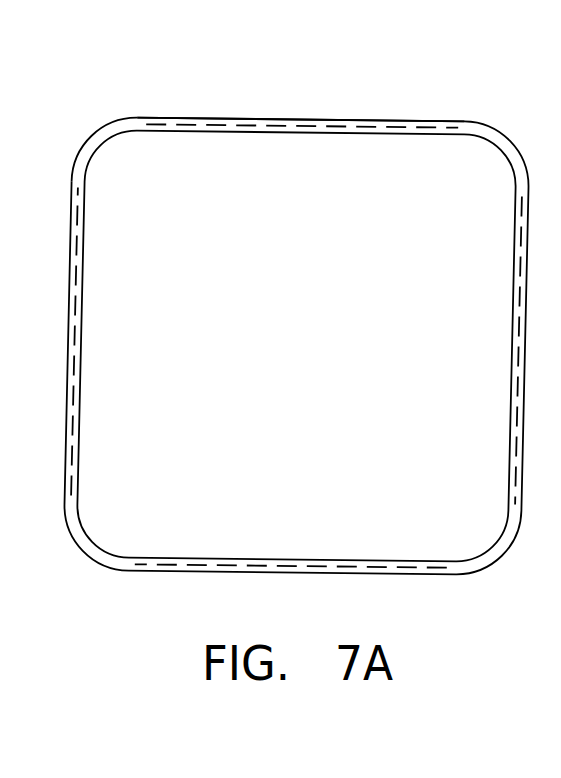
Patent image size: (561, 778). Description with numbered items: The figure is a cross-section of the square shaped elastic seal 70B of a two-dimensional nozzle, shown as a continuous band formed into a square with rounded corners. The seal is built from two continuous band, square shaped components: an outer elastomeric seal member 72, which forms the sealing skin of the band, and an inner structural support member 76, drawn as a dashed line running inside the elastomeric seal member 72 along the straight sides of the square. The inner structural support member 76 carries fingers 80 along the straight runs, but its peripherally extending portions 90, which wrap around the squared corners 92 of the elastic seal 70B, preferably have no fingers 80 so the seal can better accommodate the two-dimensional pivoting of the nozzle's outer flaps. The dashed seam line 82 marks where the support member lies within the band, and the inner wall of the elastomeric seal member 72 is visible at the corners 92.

The square shaped elastic seal 70B is at (308, 83).
The elastomeric seal member 72 is at (480, 122).
The inner structural support member 76 is at (370, 127).
The fingers 80 is at (158, 120).
The dashed seam line 82 is at (177, 120).
The peripherally extending portions 90 is at (108, 130).
The squared corners 92 is at (108, 142).